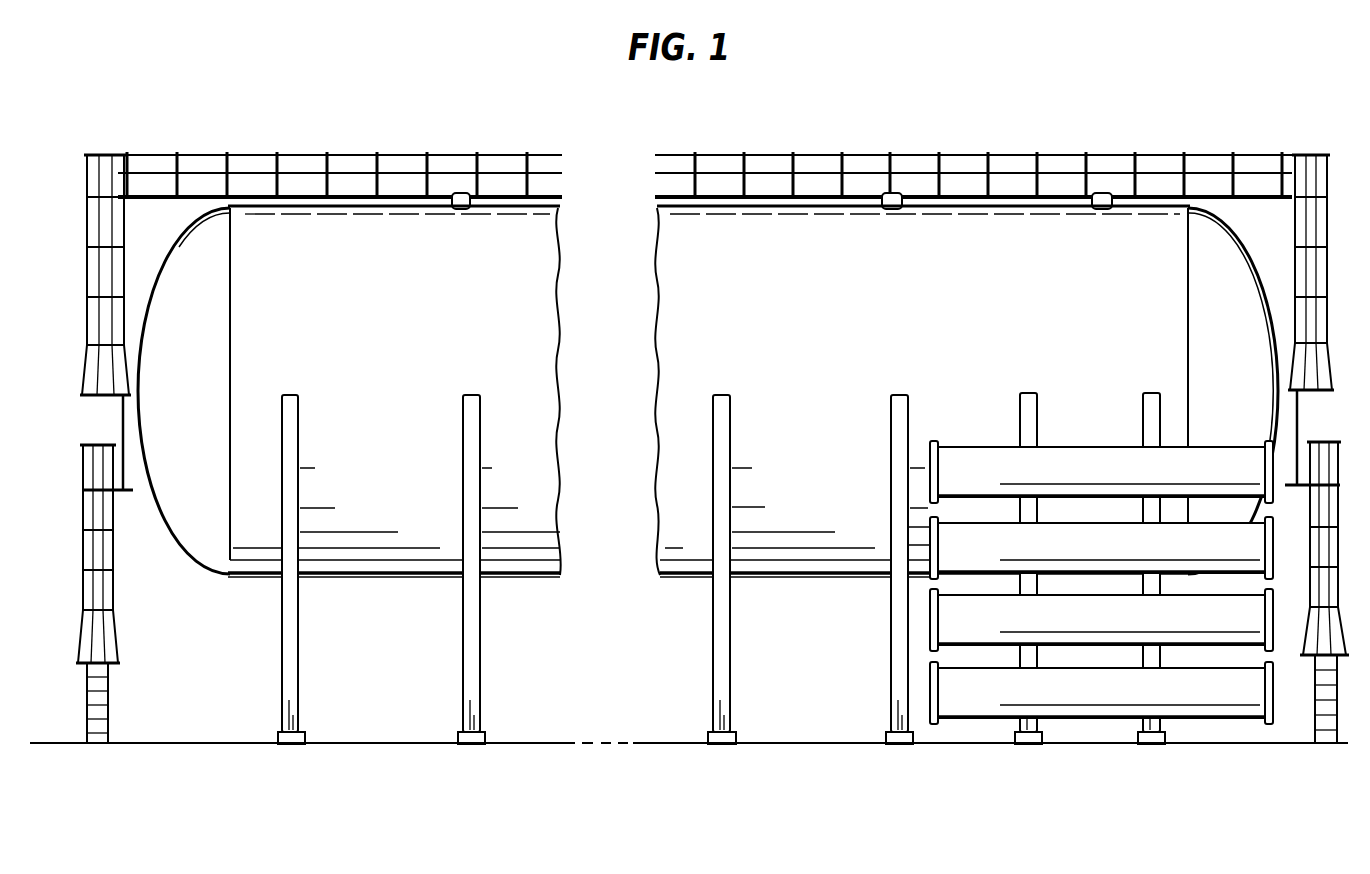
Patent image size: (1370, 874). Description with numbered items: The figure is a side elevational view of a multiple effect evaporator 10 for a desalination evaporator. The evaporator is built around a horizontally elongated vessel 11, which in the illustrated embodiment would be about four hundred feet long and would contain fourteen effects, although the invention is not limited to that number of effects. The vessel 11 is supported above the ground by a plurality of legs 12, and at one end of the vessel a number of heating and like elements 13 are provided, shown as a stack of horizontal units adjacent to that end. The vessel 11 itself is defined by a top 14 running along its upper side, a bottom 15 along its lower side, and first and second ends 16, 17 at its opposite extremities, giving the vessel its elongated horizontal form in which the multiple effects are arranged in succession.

The multiple effect evaporator 10 is at (518, 797).
The horizontally elongated vessel 11 is at (1005, 232).
The legs 12 is at (897, 681).
The heating and like elements 13 is at (1252, 614).
The top 14 is at (767, 210).
The bottom 15 is at (812, 577).
The first end 16 is at (1225, 262).
The second end 17 is at (150, 405).